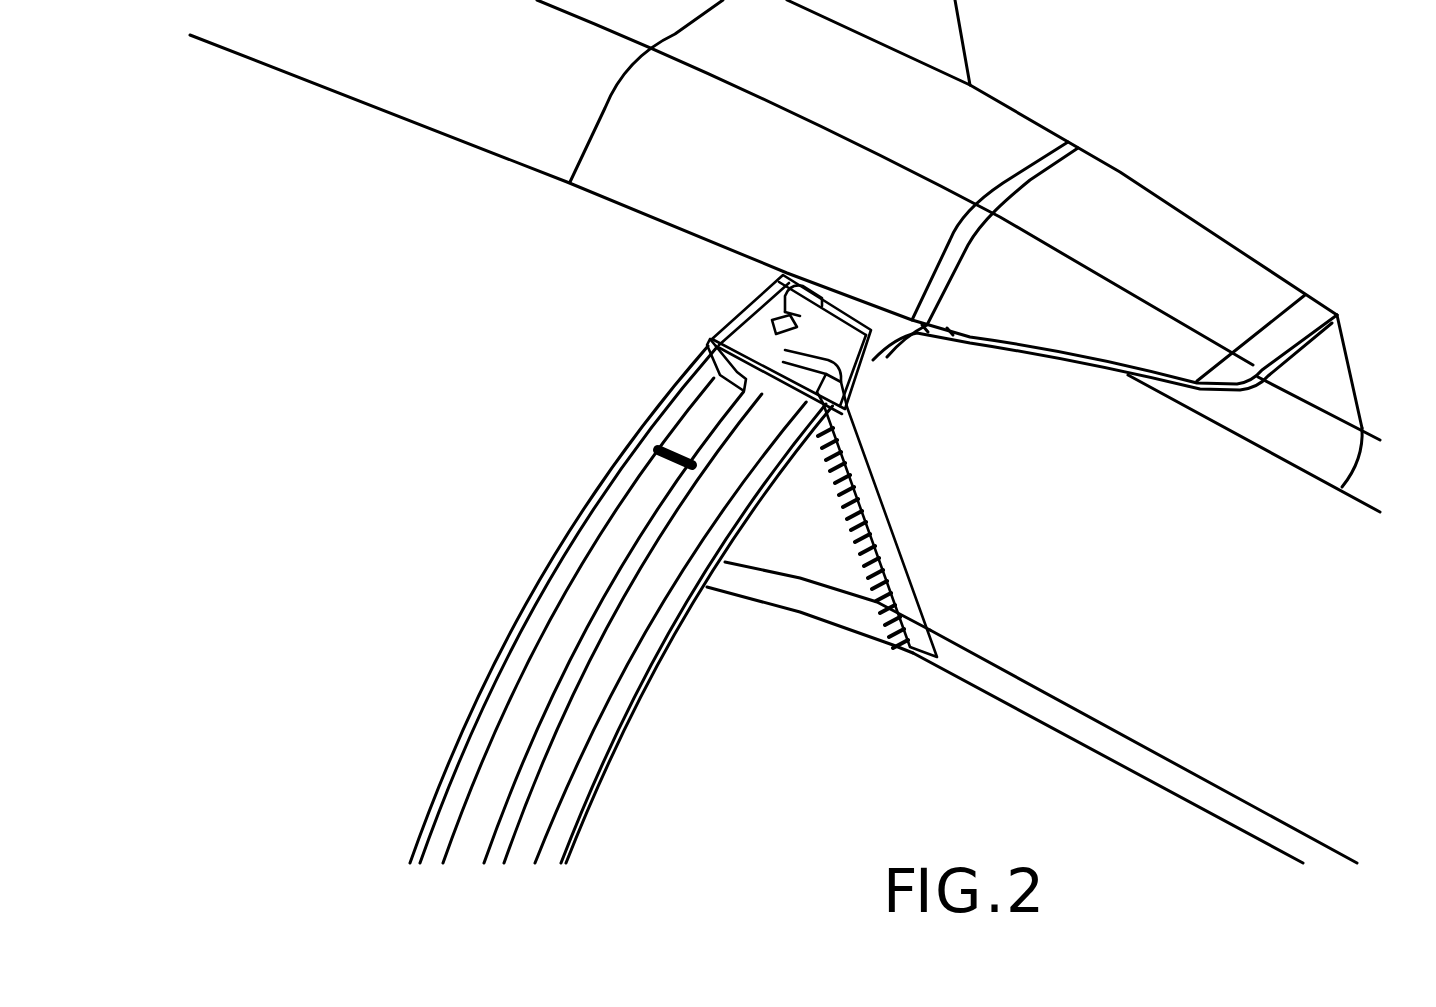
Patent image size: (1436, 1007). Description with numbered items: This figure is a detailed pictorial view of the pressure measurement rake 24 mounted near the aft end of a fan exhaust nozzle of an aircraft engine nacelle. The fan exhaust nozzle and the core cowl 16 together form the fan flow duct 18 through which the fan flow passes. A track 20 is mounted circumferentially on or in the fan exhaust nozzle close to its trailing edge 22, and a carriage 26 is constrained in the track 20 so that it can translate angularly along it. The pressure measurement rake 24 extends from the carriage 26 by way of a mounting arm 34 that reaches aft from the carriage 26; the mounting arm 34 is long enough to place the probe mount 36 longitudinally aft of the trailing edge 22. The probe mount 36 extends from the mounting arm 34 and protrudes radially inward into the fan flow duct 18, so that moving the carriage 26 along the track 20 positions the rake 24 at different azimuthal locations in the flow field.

The core cowl 16 is at (1007, 792).
The fan flow duct 18 is at (750, 613).
The track 20 is at (593, 687).
The trailing edge 22 is at (620, 748).
The pressure measurement rake 24 is at (846, 464).
The carriage 26 is at (703, 425).
The mounting arm 34 is at (716, 335).
The probe mount 36 is at (877, 517).